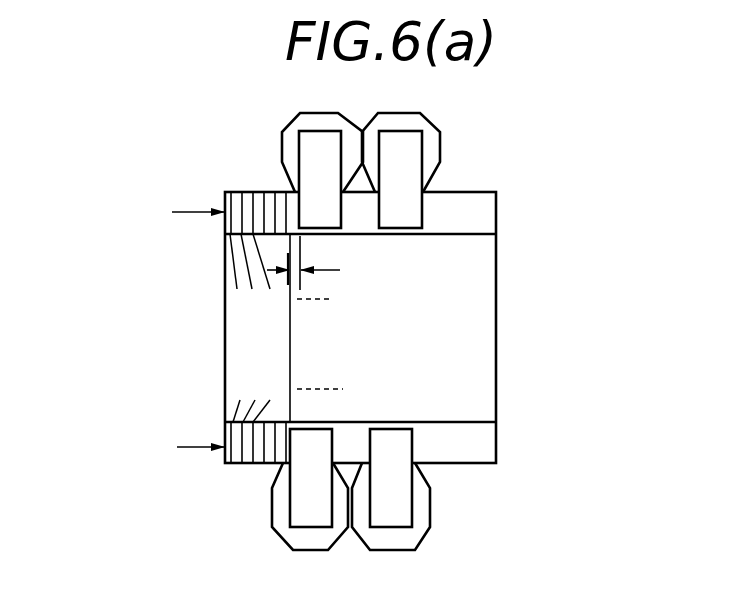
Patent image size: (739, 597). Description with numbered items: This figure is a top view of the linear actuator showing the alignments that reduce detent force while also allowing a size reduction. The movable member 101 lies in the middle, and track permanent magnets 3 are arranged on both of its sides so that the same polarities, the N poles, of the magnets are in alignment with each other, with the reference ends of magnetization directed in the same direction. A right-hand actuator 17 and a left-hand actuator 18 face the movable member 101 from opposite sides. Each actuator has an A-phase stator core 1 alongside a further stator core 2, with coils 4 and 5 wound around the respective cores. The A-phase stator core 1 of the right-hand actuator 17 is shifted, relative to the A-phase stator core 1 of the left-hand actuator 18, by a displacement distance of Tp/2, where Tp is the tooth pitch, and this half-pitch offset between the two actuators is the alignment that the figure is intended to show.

The A-phase stator core 1 is at (306, 157).
The second magnetic pole 2 is at (407, 146).
The track permanent magnet 3 is at (454, 201).
The first coil 4 is at (292, 128).
The second coil 5 is at (412, 122).
The right-hand actuator 17 is at (568, 134).
The left-hand actuator 18 is at (576, 519).
The movable member 101 is at (204, 342).